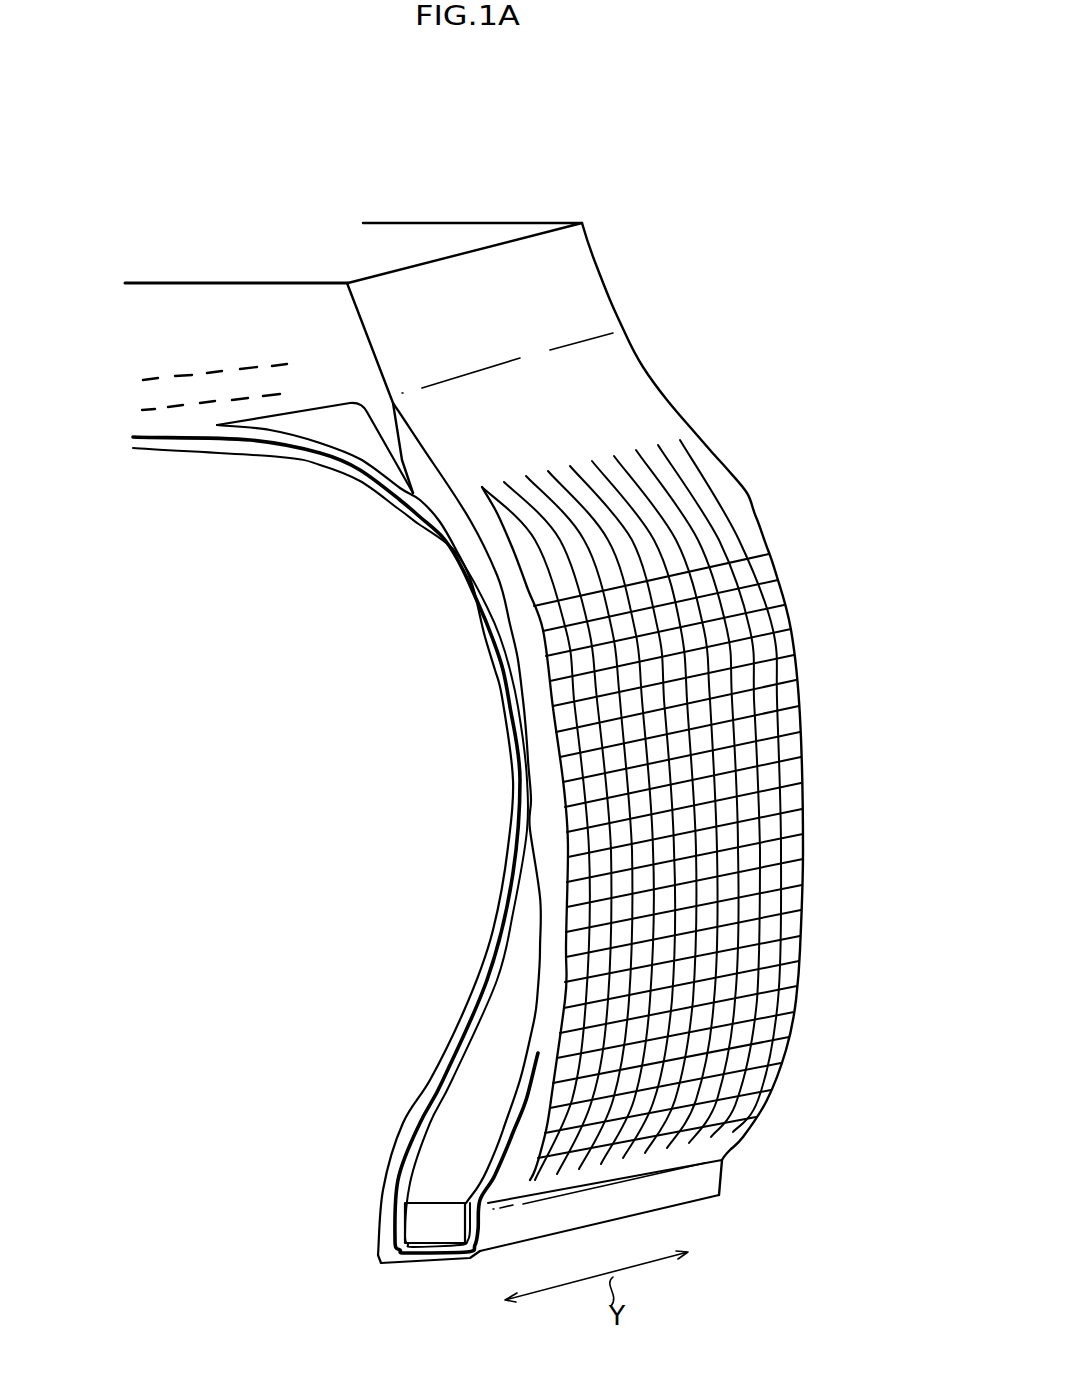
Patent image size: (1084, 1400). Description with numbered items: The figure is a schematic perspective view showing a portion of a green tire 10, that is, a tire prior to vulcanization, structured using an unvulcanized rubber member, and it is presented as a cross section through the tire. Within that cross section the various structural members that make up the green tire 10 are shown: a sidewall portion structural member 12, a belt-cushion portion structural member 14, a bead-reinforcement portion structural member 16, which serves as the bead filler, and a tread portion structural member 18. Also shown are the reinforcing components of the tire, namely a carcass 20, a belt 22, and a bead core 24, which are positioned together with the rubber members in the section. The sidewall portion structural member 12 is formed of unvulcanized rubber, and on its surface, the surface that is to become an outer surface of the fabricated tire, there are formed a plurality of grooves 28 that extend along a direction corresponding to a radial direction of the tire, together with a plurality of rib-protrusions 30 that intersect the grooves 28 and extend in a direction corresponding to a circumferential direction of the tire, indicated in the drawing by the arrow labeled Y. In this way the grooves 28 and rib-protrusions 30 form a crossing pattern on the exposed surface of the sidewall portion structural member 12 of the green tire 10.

The green tire 10 is at (697, 270).
The sidewall portion structural member 12 is at (443, 498).
The belt-cushion portion structural member 14 is at (343, 425).
The bead-reinforcement portion structural member 16 is at (470, 1117).
The tread portion structural member 18 is at (238, 317).
The carcass 20 is at (507, 697).
The belt 22 is at (183, 370).
The bead core 24 is at (433, 1227).
The grooves 28 is at (716, 478).
The rib-protrusions 30 is at (768, 578).